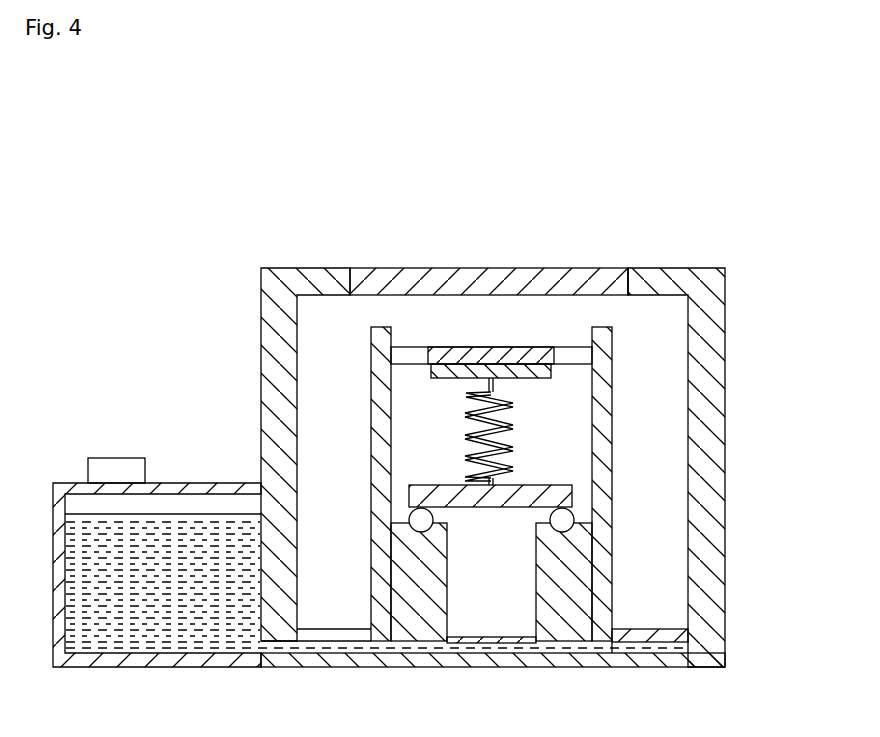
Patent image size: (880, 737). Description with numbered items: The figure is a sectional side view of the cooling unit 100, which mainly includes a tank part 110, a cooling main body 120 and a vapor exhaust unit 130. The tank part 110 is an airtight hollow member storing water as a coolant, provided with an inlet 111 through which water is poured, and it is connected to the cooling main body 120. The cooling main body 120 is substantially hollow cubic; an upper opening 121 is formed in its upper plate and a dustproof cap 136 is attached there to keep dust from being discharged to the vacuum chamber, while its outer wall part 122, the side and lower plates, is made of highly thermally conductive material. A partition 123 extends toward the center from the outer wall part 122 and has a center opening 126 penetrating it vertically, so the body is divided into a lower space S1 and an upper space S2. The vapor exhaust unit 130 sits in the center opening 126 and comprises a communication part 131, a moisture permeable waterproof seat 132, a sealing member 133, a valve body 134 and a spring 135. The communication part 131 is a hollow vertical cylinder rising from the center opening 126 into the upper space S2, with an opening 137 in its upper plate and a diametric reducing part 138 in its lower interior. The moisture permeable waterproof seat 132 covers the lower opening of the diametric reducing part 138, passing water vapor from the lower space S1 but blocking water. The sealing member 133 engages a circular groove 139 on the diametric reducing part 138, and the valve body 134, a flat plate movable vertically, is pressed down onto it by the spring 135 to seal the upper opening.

The cooling unit 100 is at (419, 384).
The tank part 110 is at (110, 388).
The inlet 111 is at (109, 458).
The cooling main body 120 is at (275, 247).
The upper opening 121 is at (620, 283).
The outer wall part 122 is at (260, 362).
The partition 123 is at (648, 632).
The center opening 126 is at (604, 640).
The vapor exhaust unit 130 is at (462, 308).
The communication part 131 is at (612, 331).
The moisture permeable waterproof seat 132 is at (487, 645).
The sealing member 133 is at (552, 518).
The valve body 134 is at (543, 485).
The spring 135 is at (512, 402).
The dustproof cap 136 is at (533, 275).
The opening 137 is at (428, 348).
The diametric reducing part 138 is at (535, 570).
The circular groove 139 is at (422, 529).
The lower space S1 is at (368, 652).
The upper space S2 is at (327, 617).